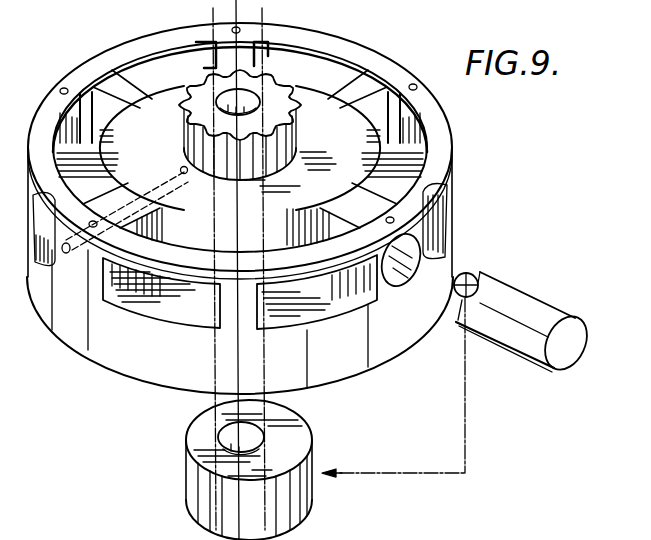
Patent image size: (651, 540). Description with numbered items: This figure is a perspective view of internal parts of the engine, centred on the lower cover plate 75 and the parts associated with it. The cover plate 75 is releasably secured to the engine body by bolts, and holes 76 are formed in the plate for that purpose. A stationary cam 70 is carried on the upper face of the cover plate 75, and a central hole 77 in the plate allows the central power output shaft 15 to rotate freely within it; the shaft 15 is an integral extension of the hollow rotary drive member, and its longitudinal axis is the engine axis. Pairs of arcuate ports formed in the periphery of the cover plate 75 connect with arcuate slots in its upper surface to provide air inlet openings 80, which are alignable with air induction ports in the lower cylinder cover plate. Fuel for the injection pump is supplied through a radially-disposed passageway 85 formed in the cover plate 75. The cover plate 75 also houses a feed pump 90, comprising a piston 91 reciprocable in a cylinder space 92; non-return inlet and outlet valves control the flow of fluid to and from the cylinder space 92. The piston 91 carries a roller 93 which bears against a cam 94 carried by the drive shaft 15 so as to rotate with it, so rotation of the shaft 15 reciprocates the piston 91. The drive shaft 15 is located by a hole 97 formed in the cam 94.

The central power output shaft 15 is at (213, 12).
The cam 70 is at (185, 108).
The lower cover plate 75 is at (305, 185).
The holes 76 is at (414, 90).
The central hole 77 is at (250, 103).
The air inlet openings 80 is at (178, 308).
The radially-disposed passageway 85 is at (67, 256).
The feed pump 90 is at (535, 291).
The piston 91 is at (517, 328).
The cylinder space 92 is at (418, 228).
The roller 93 is at (477, 278).
The cam 94 is at (313, 424).
The hole 97 is at (186, 429).